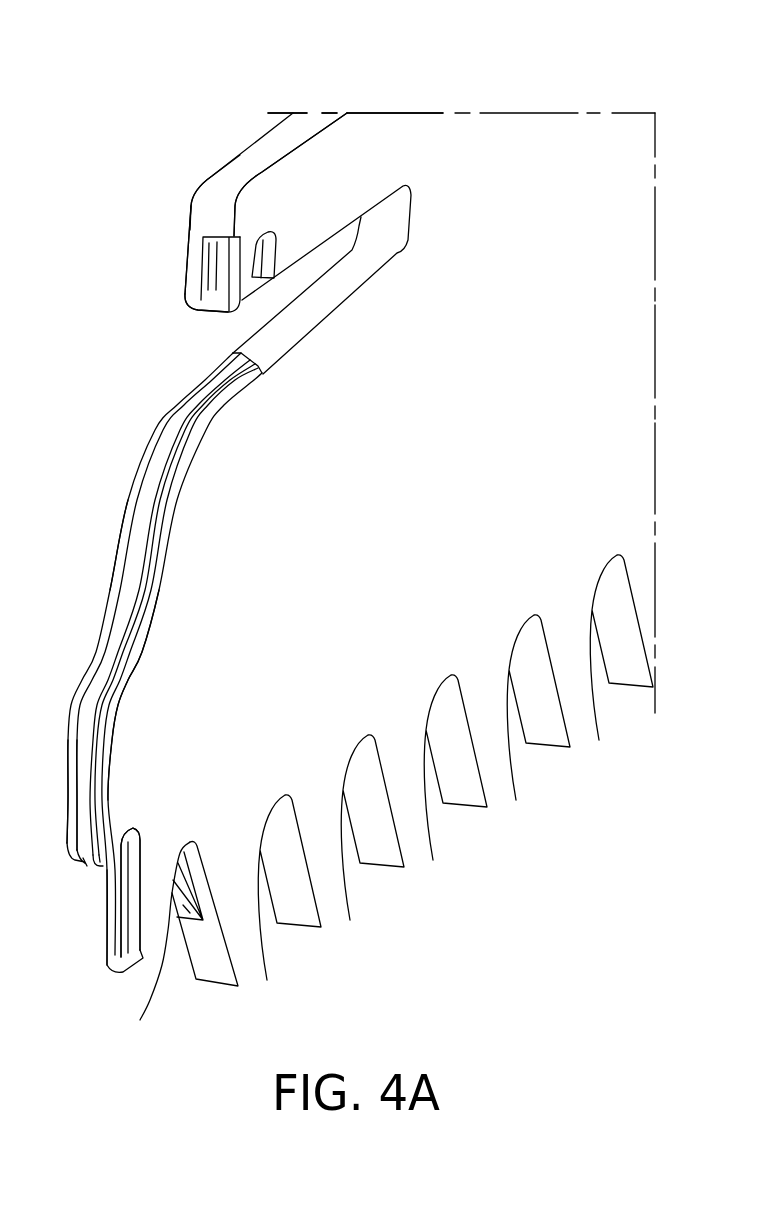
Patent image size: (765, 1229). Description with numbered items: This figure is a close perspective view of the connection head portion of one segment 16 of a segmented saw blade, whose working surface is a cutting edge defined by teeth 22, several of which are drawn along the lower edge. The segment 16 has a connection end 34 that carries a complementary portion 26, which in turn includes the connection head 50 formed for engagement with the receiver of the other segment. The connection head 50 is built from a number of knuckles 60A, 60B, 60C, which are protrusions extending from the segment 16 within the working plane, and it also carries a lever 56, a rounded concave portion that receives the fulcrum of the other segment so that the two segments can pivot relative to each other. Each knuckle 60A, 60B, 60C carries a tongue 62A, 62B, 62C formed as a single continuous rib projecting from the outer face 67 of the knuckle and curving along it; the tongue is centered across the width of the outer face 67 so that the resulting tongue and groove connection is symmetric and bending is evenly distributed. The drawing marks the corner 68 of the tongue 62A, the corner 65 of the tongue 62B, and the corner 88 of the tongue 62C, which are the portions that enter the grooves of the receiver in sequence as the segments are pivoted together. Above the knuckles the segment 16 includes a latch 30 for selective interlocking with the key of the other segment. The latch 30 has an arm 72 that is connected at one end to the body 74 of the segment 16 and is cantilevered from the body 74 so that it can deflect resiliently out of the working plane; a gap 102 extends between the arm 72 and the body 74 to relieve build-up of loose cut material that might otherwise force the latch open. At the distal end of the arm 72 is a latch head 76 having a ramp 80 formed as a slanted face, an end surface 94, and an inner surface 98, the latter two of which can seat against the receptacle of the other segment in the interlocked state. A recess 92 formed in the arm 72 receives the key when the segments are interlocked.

The segment 16 is at (522, 148).
The teeth 22 is at (330, 910).
The complementary portion 26 is at (375, 91).
The latch 30 is at (322, 132).
The connection end 34 is at (205, 94).
The connection head 50 is at (80, 380).
The lever 56 is at (201, 824).
The knuckle 60A is at (232, 452).
The knuckle 60B is at (162, 666).
The knuckle 60C is at (152, 830).
The tongue 62A is at (204, 380).
The tongue 62B is at (98, 652).
The tongue 62C is at (87, 783).
The corner 65 is at (90, 720).
The outer face 67 is at (148, 614).
The corner 68 is at (137, 513).
The arm 72 is at (380, 158).
The body 74 is at (582, 258).
The latch head 76 is at (200, 170).
The ramp 80 is at (215, 290).
The corner 88 is at (83, 860).
The recess 92 is at (258, 291).
The end surface 94 is at (205, 224).
The inner surface 98 is at (196, 316).
The gap 102 is at (384, 231).